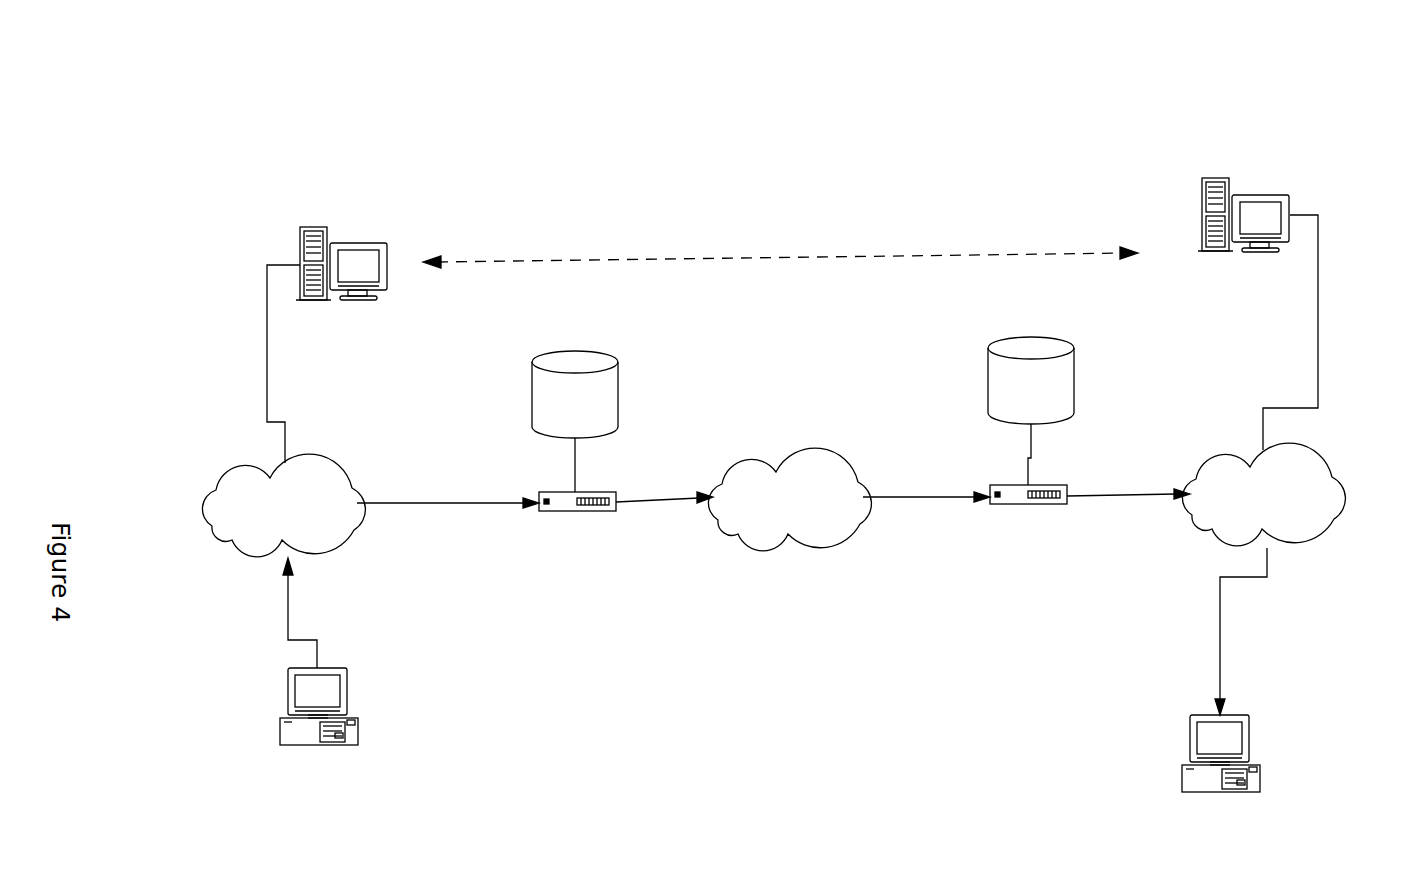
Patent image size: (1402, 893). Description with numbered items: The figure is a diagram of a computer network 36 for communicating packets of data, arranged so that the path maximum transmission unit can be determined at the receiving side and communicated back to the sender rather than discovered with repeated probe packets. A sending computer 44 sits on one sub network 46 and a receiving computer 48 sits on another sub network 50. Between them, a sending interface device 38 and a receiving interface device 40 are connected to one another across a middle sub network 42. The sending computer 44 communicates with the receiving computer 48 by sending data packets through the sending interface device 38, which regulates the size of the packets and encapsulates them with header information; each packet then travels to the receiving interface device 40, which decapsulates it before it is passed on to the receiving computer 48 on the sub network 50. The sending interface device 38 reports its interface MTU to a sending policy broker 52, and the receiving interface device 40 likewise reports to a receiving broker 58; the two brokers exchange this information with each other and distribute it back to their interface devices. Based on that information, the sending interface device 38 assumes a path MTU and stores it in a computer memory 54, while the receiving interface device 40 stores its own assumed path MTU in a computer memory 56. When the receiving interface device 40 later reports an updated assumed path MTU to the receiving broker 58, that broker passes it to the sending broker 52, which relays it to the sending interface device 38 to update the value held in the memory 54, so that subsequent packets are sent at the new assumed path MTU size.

The computer network 36 is at (266, 98).
The sending interface device 38 is at (615, 530).
The receiving interface device 40 is at (1079, 525).
The sub network 42 is at (849, 516).
The sending computer 44 is at (303, 651).
The sub network 46 is at (355, 505).
The receiving computer 48 is at (1236, 670).
The sub network 50 is at (1282, 494).
The sending policy broker 52 is at (330, 330).
The computer memory 54 is at (557, 421).
The computer memory 56 is at (1015, 411).
The receiving broker 58 is at (1240, 314).